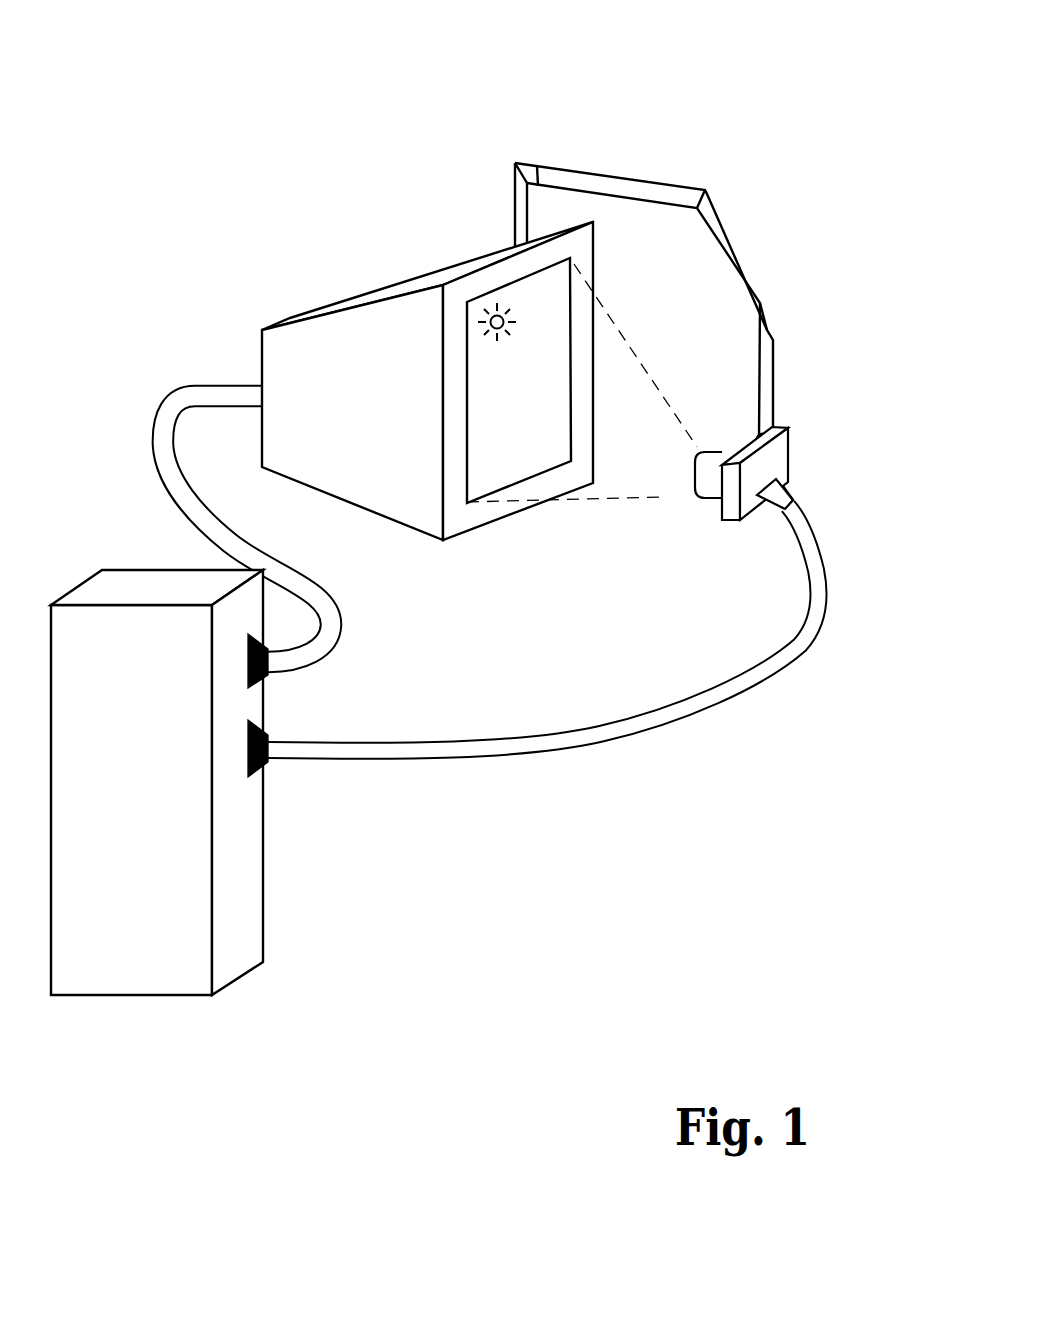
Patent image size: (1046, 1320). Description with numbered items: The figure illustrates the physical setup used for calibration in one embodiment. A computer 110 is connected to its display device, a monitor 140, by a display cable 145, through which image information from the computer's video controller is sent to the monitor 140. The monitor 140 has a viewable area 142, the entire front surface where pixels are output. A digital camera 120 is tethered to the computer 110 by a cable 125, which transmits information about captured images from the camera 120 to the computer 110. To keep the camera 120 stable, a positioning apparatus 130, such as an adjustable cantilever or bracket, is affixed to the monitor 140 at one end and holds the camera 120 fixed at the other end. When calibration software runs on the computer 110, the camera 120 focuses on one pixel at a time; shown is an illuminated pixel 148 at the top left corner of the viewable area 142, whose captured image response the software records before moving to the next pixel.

The computer 110 is at (162, 997).
The digital camera 120 is at (792, 458).
The cable 125 is at (470, 757).
The positioning apparatus 130 is at (628, 175).
The monitor 140 is at (427, 368).
The viewable area 142 is at (502, 450).
The display cable 145 is at (151, 439).
The illuminated pixel 148 is at (480, 307).